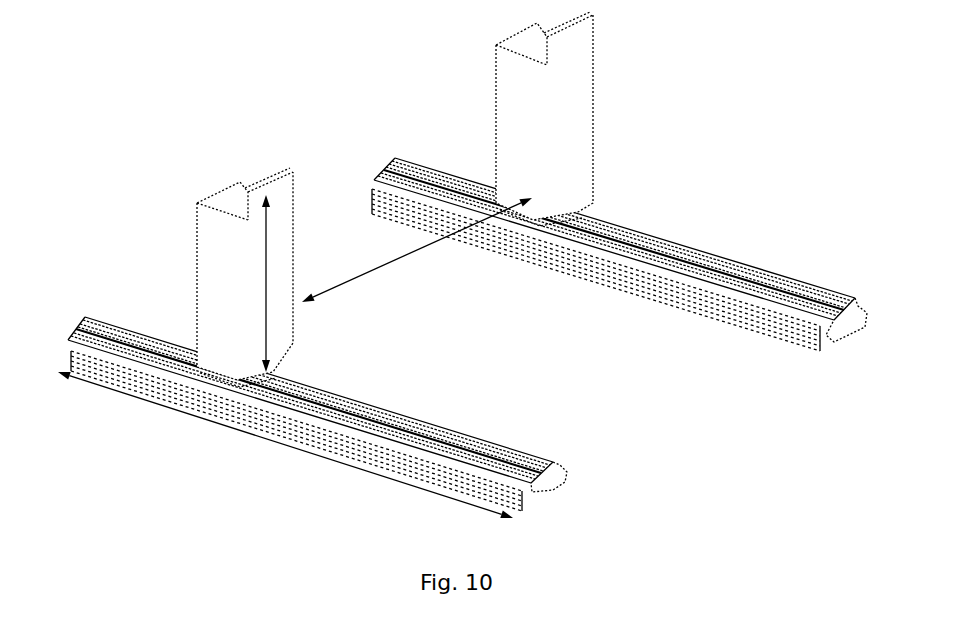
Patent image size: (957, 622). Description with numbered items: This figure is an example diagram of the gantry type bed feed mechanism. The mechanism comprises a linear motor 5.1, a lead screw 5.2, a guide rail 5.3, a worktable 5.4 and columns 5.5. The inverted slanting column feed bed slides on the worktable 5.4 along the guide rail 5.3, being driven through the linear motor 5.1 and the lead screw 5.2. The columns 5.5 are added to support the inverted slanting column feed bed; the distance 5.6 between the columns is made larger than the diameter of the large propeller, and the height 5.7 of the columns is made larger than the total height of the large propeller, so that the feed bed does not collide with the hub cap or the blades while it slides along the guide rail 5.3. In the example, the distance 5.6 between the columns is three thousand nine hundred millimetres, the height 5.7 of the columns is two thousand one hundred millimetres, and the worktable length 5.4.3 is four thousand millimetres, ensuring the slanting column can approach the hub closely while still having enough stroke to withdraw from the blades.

The linear motor 5.1 is at (390, 167).
The lead screw 5.2 is at (420, 438).
The guide rail 5.3 is at (538, 458).
The worktable 5.4 is at (553, 488).
The column 5.5 is at (255, 332).
The distance between columns 5.6 is at (377, 270).
The height of column 5.7 is at (247, 283).
The worktable length 5.4.3 is at (285, 445).